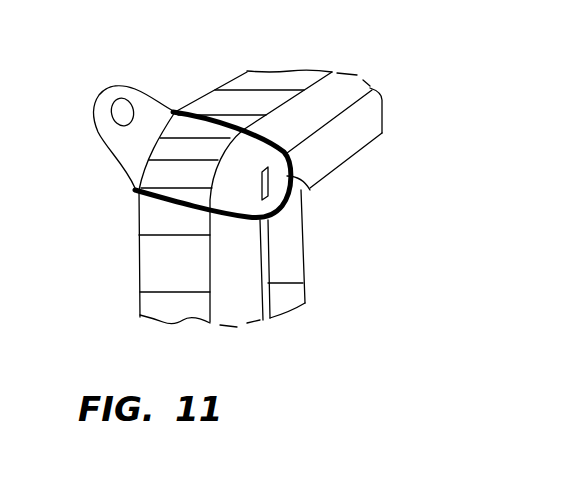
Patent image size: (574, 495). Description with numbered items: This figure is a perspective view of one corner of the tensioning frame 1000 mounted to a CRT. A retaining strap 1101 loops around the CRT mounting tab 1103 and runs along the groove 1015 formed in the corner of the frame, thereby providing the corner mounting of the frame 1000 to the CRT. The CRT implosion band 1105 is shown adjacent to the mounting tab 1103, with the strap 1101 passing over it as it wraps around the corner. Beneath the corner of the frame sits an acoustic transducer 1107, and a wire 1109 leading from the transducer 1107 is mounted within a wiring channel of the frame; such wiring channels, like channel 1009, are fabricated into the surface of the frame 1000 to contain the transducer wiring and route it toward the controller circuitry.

The frame 1000 is at (350, 137).
The retaining strap 1101 is at (161, 203).
The CRT mounting tab 1103 is at (143, 108).
The CRT implosion band 1105 is at (290, 80).
The groove 1015 is at (311, 188).
The acoustic transducer 1107 is at (275, 196).
The wire 1109 is at (272, 206).
The wiring channel 1009 is at (304, 284).